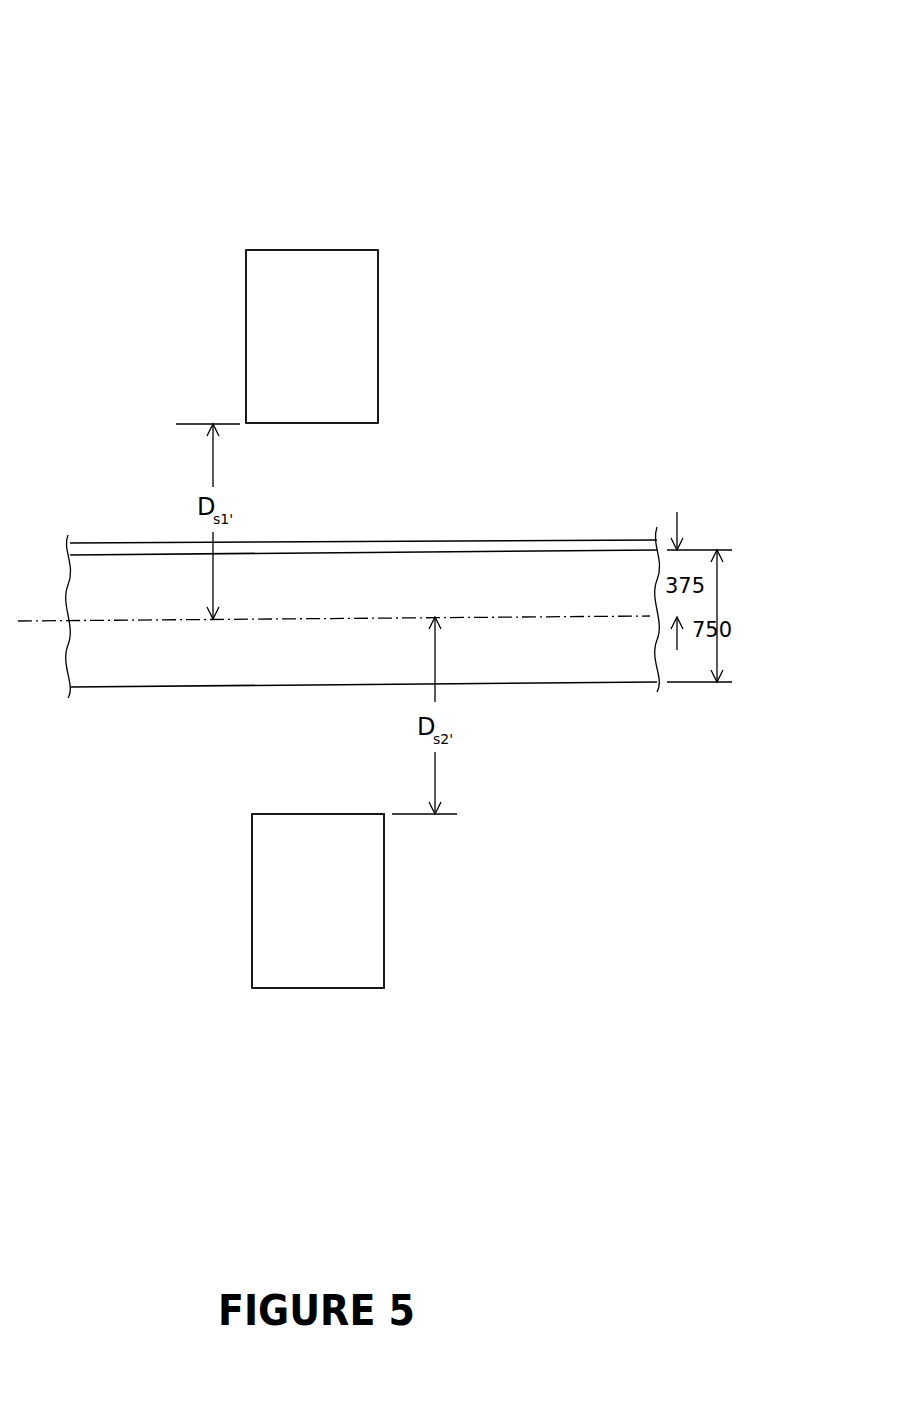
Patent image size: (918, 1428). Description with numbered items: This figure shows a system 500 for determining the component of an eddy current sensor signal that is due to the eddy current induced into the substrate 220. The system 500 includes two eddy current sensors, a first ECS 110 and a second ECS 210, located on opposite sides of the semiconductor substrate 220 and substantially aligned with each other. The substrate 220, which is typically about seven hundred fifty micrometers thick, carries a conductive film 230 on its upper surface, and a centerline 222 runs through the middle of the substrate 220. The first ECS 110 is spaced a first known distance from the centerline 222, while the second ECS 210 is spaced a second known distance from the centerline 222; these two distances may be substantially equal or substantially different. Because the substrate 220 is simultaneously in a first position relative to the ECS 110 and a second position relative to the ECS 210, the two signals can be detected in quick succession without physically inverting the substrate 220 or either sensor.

The system 500 is at (344, 52).
The ECS 110 is at (357, 250).
The ECS 210 is at (384, 900).
The substrate 220 is at (590, 682).
The centerline 222 is at (110, 622).
The conductive film 230 is at (578, 543).